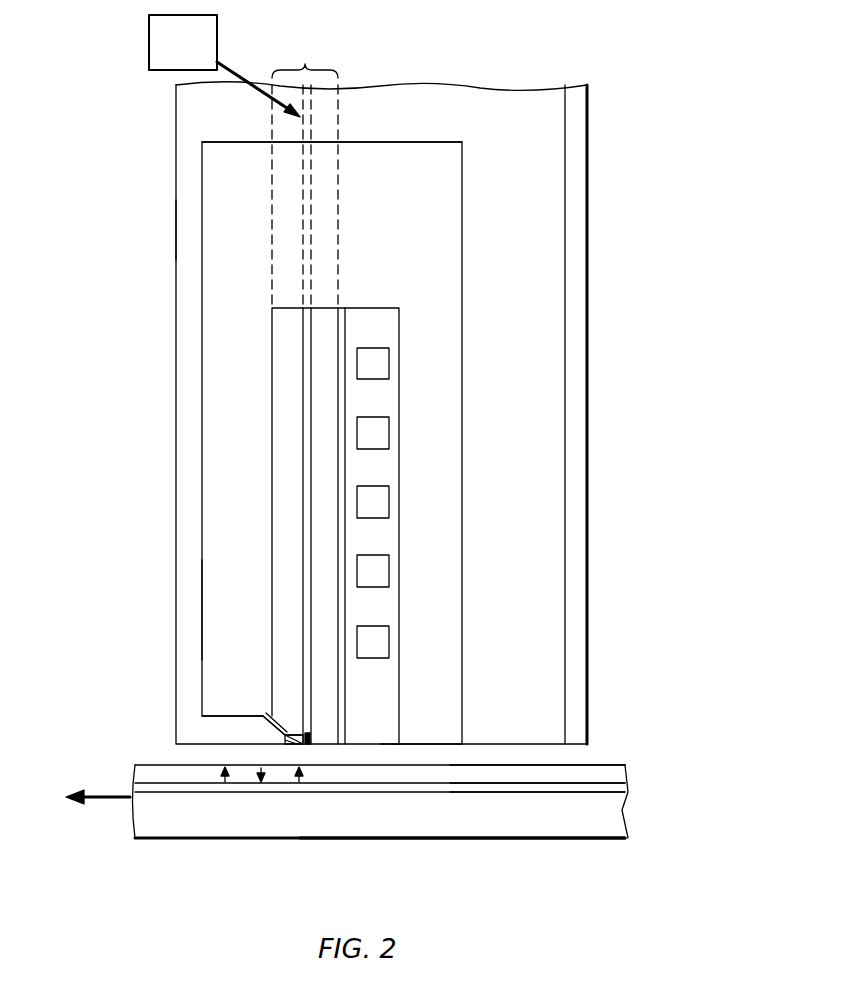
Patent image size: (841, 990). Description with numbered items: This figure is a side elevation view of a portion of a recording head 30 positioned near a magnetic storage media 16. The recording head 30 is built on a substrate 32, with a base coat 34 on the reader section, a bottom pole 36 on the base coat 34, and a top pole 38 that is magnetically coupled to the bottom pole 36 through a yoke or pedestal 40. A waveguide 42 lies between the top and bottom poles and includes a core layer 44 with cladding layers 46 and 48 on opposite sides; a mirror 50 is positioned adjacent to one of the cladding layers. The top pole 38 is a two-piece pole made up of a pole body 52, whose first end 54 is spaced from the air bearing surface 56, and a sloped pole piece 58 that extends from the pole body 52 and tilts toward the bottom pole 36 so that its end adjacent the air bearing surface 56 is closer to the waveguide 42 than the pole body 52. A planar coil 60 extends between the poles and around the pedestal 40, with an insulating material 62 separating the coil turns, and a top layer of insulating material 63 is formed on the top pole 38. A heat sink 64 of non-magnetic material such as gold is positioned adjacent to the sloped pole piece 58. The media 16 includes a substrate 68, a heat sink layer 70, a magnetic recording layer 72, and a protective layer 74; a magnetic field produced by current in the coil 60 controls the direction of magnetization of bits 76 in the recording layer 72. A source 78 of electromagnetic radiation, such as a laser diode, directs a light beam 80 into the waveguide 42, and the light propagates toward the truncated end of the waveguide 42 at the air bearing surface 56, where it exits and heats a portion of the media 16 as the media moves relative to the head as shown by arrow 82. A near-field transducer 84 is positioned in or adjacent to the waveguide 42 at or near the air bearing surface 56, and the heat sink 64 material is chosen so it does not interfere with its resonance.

The magnetic storage media 16 is at (625, 752).
The recording head 30 is at (133, 158).
The substrate 32 is at (577, 98).
The base coat 34 is at (518, 105).
The bottom pole 36 is at (450, 466).
The top pole 38 is at (210, 505).
The pedestal 40 is at (395, 155).
The waveguide 42 is at (305, 169).
The core layer 44 is at (308, 390).
The cladding layer 46 is at (318, 343).
The cladding layer 48 is at (285, 447).
The mirror 50 is at (345, 315).
The pole body 52 is at (210, 613).
The first end 54 is at (216, 716).
The air bearing surface 56 is at (386, 745).
The sloped pole piece 58 is at (280, 724).
The planar coil 60 is at (385, 505).
The insulating material 62 is at (397, 698).
The top layer of insulating material 63 is at (190, 232).
The heat sink 64 is at (300, 735).
The substrate 68 is at (595, 825).
The heat sink layer 70 is at (620, 790).
The magnetic recording layer 72 is at (612, 776).
The protective layer 74 is at (605, 762).
The bits 76 is at (222, 778).
The source of electromagnetic radiation 78 is at (149, 45).
The light beam 80 is at (247, 68).
The arrow 82 is at (96, 800).
The near-field transducer 84 is at (310, 738).